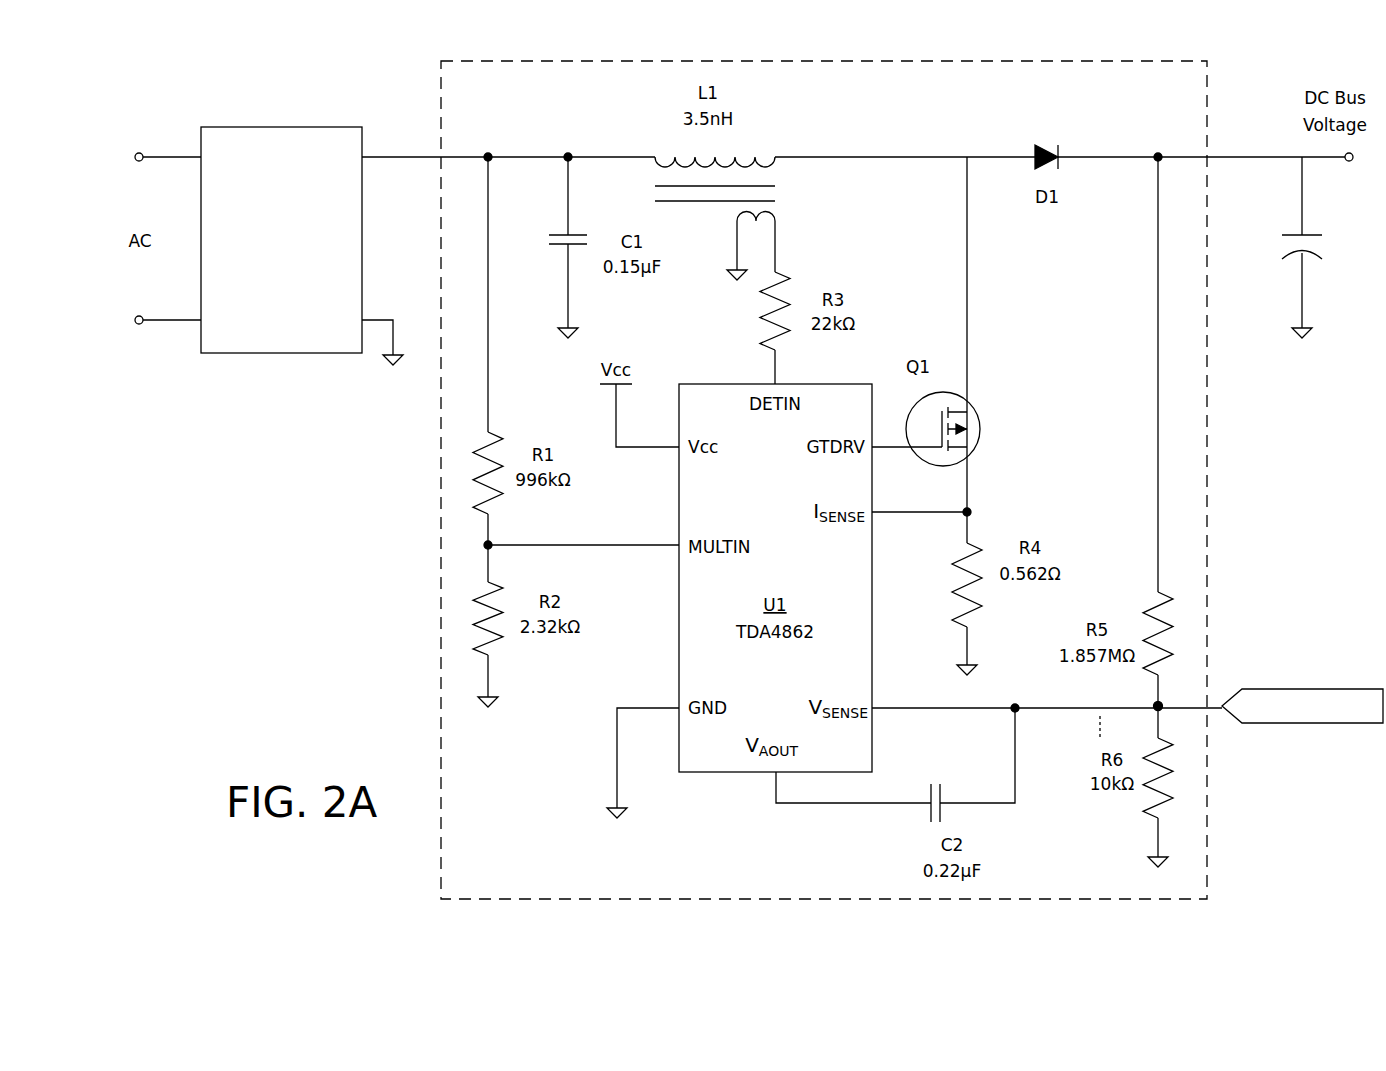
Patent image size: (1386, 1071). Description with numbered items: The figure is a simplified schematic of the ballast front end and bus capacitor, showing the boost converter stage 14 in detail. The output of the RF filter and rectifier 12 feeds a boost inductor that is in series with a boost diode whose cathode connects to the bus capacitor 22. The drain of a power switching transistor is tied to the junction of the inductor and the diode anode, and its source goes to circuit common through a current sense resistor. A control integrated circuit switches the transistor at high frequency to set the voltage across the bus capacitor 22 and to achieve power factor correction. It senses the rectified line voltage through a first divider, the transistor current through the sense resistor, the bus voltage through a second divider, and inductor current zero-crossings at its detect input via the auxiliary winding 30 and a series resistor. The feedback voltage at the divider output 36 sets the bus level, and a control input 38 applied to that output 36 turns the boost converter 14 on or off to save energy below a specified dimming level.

The RF filter and rectifier 12 is at (232, 158).
The boost converter stage 14 is at (441, 545).
The bus capacitor 22 is at (1297, 233).
The auxiliary winding 30 is at (775, 217).
The output of the voltage divider 36 is at (1158, 708).
The control input 38 is at (1302, 689).